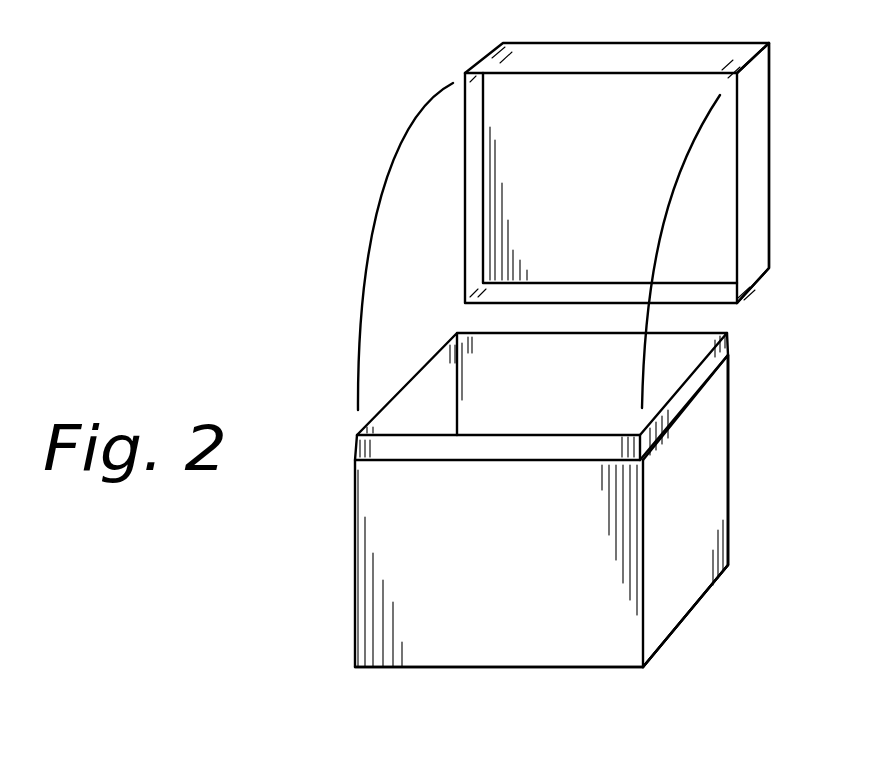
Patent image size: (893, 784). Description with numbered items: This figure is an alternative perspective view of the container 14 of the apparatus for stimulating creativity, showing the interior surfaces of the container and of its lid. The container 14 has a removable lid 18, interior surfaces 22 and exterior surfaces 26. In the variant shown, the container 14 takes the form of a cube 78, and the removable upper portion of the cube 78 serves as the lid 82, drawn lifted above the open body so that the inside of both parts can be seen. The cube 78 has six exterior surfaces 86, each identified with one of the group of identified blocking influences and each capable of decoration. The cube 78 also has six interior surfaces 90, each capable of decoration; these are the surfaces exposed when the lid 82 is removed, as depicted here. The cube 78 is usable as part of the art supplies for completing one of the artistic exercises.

The container 14 is at (718, 540).
The removable lid 18 is at (760, 243).
The interior surfaces 22 is at (697, 345).
The exterior surfaces 26 is at (715, 445).
The cube 78 is at (707, 573).
The lid 82 is at (760, 147).
The exterior surfaces 86 is at (720, 398).
The interior surfaces 90 is at (402, 407).